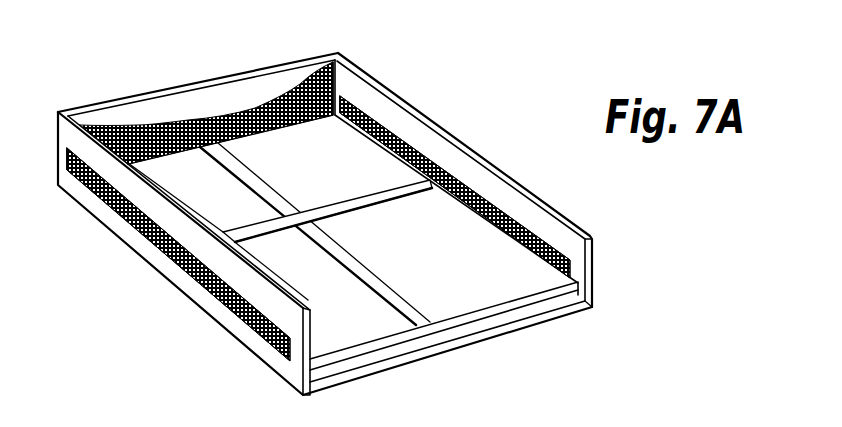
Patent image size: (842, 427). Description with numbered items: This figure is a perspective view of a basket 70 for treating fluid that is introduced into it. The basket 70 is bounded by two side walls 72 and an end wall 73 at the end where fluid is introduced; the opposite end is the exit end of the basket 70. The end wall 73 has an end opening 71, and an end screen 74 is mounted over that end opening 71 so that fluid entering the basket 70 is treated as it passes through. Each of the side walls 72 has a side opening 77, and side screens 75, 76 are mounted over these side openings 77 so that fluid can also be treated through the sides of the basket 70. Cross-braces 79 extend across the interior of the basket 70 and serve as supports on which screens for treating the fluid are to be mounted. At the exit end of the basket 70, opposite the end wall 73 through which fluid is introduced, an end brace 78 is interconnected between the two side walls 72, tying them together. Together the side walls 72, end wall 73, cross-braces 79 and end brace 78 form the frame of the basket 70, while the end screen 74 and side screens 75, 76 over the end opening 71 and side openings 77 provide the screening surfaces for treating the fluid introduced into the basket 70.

The basket 70 is at (182, 320).
The end opening 71 is at (212, 117).
The side walls 72 is at (190, 238).
The end wall 73 is at (155, 112).
The end screen 74 is at (290, 98).
The side screen 75 is at (122, 207).
The side screen 76 is at (510, 237).
The side openings 77 is at (387, 128).
The end brace 78 is at (365, 356).
The cross-braces 79 is at (360, 203).